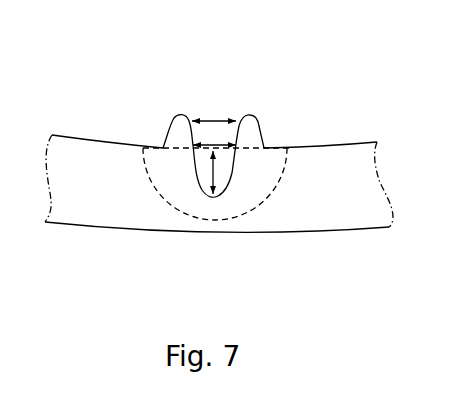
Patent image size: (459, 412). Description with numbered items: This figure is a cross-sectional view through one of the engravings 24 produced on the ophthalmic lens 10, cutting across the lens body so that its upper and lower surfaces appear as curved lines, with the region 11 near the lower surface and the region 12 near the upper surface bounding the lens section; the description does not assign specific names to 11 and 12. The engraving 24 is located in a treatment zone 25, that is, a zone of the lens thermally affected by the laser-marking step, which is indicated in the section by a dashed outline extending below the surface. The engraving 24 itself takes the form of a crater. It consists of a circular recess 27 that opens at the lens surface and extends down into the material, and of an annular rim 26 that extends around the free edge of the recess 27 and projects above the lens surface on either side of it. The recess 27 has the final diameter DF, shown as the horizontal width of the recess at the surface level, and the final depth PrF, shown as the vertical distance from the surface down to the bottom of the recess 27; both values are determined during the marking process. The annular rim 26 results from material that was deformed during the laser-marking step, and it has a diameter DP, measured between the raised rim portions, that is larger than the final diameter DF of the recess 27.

The ophthalmic lens 10 is at (219, 193).
The bottom surface of strip 11 is at (123, 250).
The top surface of strip 12 is at (339, 130).
The engraving 24 is at (249, 218).
The treatment zone 25 is at (263, 172).
The annular rim 26 is at (185, 120).
The circular recess 27 is at (228, 176).
The rim diameter DP is at (213, 120).
The final diameter DF is at (205, 150).
The final depth PrF is at (207, 150).